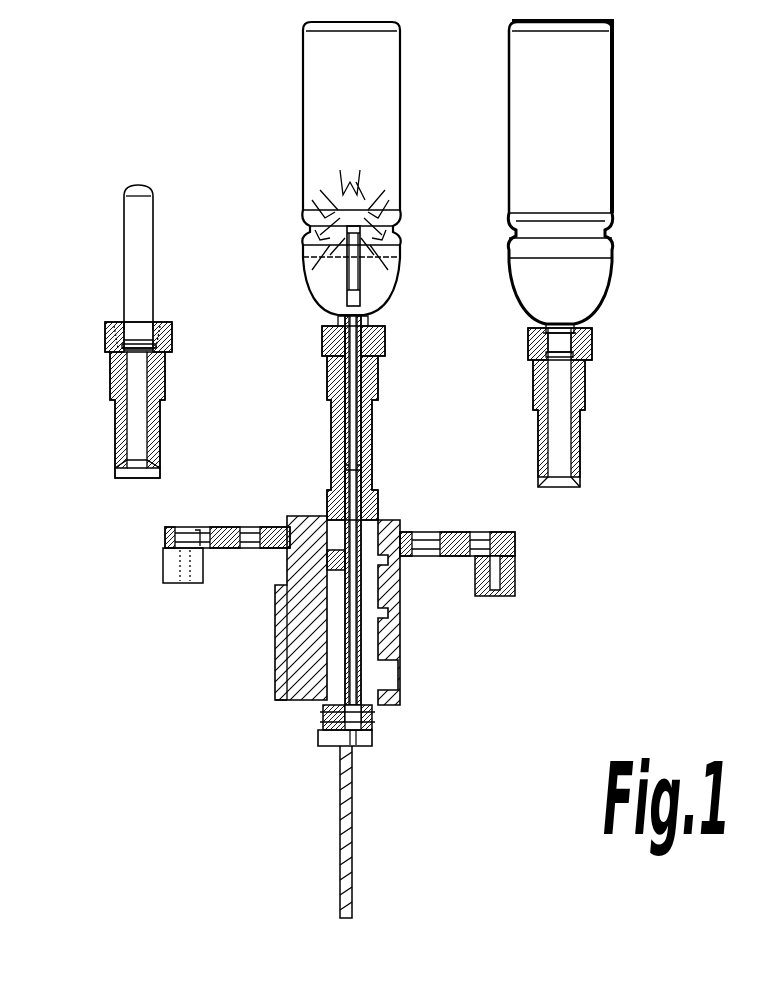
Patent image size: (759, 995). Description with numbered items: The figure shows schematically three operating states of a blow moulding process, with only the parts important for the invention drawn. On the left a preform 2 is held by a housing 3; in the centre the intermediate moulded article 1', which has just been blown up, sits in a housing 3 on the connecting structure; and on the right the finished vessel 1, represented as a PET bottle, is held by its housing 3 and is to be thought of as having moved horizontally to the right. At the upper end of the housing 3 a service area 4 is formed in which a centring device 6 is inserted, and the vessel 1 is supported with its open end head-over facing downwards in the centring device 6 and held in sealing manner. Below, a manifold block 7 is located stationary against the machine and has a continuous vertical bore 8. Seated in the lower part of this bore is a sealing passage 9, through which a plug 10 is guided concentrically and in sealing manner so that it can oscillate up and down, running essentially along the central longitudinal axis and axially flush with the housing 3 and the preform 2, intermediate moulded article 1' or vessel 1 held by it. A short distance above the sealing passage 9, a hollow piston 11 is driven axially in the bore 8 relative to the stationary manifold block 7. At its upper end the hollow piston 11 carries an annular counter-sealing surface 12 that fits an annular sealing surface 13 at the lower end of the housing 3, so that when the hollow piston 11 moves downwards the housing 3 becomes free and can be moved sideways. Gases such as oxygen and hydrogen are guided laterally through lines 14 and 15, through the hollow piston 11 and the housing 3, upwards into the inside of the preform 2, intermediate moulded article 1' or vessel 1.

The vessel 1 is at (591, 177).
The intermediate moulded article 1' is at (320, 168).
The preform 2 is at (155, 225).
The housing 3 is at (120, 366).
The service area 4 is at (142, 345).
The centring device 6 is at (118, 320).
The manifold block 7 is at (276, 638).
The bore 8 is at (325, 575).
The sealing passage 9 is at (333, 701).
The plug 10 is at (352, 790).
The hollow piston 11 is at (385, 521).
The counter-sealing surface 12 is at (332, 468).
The sealing surface 13 is at (124, 466).
The line 14 is at (232, 527).
The line 15 is at (460, 540).